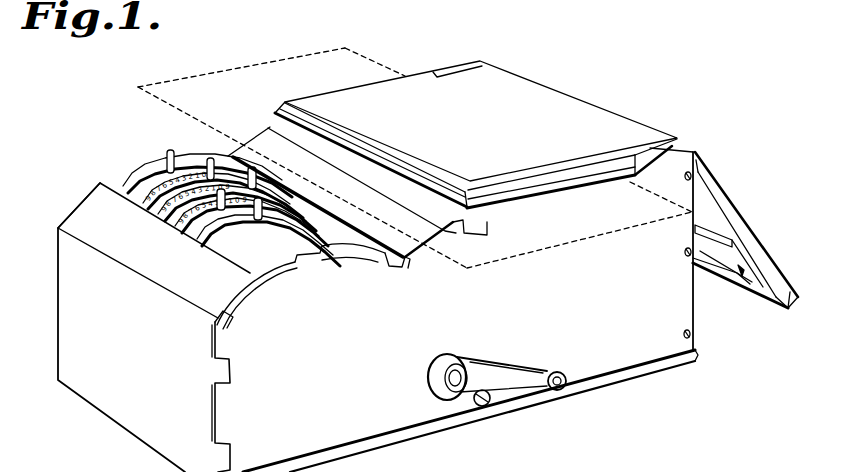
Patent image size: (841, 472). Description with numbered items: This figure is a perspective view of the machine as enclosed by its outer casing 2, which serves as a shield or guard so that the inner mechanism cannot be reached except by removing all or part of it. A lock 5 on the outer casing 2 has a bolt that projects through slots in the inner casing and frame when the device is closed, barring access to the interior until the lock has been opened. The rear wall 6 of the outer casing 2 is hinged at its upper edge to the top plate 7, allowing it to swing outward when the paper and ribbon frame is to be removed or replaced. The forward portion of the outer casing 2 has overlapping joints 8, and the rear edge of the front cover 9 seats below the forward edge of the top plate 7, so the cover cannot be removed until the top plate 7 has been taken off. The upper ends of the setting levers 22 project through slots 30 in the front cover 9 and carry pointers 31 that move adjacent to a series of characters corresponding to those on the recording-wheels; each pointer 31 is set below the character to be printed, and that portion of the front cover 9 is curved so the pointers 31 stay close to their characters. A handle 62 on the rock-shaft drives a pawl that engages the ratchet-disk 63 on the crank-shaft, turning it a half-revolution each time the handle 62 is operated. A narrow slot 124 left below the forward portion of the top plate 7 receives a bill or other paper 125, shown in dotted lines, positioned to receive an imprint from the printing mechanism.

The outer casing 2 is at (390, 424).
The lock 5 is at (732, 268).
The rear wall 6 is at (740, 193).
The top plate 7 is at (417, 80).
The overlapping joints 8 is at (233, 315).
The front cover 9 is at (268, 263).
The levers 22 is at (170, 152).
The slot 30 is at (140, 193).
The pointer 31 is at (280, 217).
The handle 62 is at (497, 366).
The ratchet-disk 63 is at (490, 398).
The slot 124 is at (528, 202).
The bill or other paper 125 is at (163, 97).